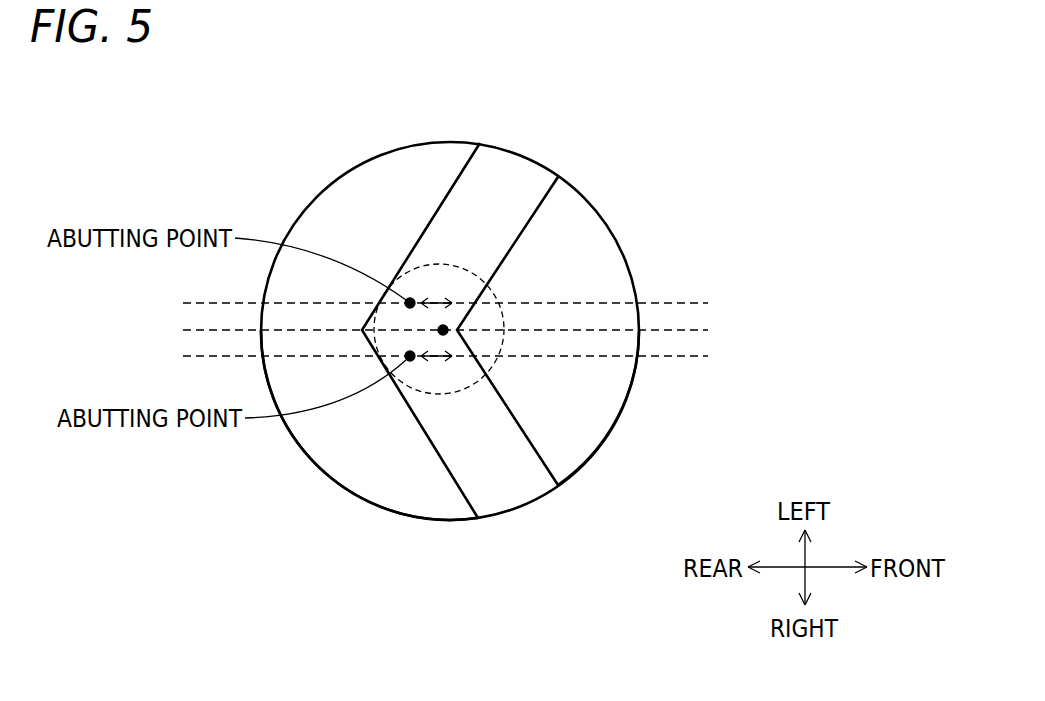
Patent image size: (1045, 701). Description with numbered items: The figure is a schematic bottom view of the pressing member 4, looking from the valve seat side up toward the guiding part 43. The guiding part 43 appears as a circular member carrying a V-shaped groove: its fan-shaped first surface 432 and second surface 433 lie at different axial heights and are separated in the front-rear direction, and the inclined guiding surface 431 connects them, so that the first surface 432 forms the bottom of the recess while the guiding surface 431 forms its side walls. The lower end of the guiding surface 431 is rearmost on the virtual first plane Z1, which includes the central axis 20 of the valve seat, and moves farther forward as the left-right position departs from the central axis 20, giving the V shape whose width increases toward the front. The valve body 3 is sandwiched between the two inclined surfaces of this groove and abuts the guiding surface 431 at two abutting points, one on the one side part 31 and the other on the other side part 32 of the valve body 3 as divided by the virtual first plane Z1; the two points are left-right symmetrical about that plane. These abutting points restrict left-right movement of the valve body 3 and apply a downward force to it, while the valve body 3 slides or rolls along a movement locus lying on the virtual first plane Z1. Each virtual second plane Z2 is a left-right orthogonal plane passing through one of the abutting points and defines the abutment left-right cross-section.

The pressing member 4 is at (242, 120).
The guiding part 43 is at (377, 175).
The guiding surface 431 is at (457, 258).
The first surface 432 is at (563, 430).
The second surface 433 is at (368, 453).
The valve body 3 is at (493, 297).
The one side part 31 is at (477, 277).
The other side part 32 is at (493, 365).
The central axis 20 is at (443, 332).
The virtual first plane Z1 is at (680, 330).
The virtual second plane Z2 is at (700, 302).